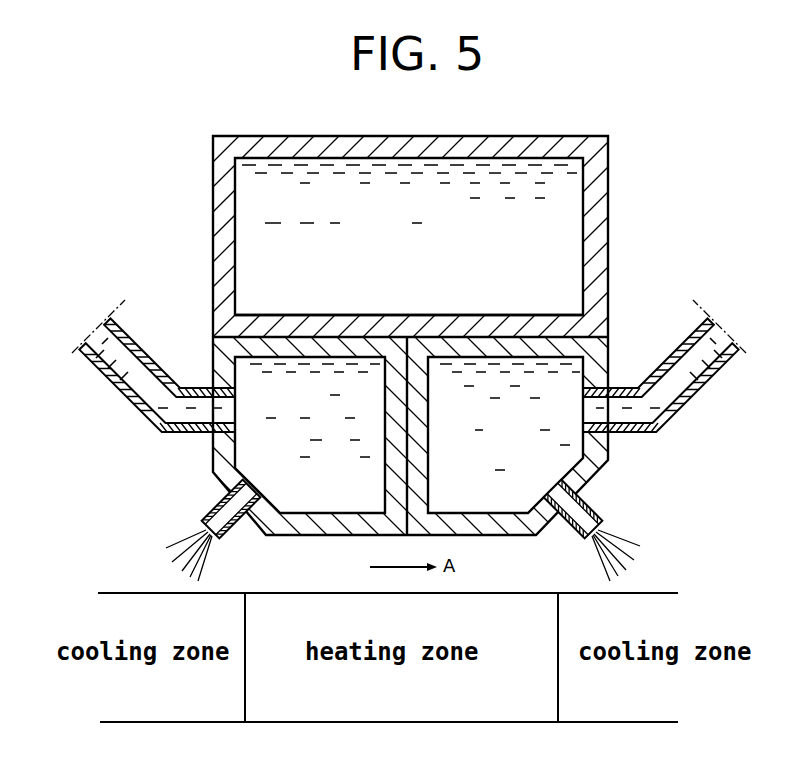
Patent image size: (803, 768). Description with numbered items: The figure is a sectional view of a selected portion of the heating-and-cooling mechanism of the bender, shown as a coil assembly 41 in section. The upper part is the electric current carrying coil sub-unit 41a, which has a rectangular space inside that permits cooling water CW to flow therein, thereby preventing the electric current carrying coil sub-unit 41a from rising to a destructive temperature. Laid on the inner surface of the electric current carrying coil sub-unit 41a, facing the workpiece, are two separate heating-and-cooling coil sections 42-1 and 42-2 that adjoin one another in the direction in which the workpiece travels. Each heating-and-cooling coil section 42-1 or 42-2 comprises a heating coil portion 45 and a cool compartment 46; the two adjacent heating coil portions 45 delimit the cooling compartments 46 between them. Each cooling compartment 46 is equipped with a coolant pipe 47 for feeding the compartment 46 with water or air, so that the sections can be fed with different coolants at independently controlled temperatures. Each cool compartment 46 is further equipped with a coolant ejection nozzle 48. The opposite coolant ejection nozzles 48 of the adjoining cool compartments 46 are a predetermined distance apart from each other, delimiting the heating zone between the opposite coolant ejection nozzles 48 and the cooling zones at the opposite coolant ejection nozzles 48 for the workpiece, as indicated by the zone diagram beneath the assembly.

The processing vessel 41 is at (655, 192).
The electric current carrying coil sub-unit 41a is at (222, 220).
The cooling water CW is at (257, 198).
The heating coil portion 45 is at (328, 346).
The cooling compartment 46 is at (243, 378).
The coolant pipe 47 is at (113, 365).
The heating-and-cooling coil section 42-1 is at (610, 443).
The heating-and-cooling coil section 42-2 is at (213, 458).
The coolant ejection nozzle 48 is at (212, 498).